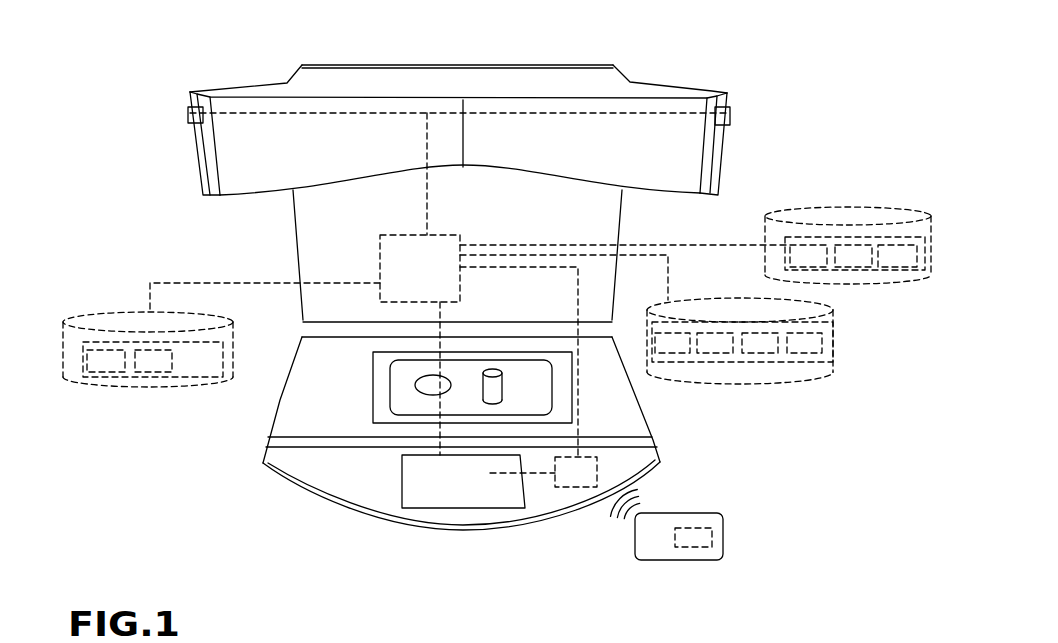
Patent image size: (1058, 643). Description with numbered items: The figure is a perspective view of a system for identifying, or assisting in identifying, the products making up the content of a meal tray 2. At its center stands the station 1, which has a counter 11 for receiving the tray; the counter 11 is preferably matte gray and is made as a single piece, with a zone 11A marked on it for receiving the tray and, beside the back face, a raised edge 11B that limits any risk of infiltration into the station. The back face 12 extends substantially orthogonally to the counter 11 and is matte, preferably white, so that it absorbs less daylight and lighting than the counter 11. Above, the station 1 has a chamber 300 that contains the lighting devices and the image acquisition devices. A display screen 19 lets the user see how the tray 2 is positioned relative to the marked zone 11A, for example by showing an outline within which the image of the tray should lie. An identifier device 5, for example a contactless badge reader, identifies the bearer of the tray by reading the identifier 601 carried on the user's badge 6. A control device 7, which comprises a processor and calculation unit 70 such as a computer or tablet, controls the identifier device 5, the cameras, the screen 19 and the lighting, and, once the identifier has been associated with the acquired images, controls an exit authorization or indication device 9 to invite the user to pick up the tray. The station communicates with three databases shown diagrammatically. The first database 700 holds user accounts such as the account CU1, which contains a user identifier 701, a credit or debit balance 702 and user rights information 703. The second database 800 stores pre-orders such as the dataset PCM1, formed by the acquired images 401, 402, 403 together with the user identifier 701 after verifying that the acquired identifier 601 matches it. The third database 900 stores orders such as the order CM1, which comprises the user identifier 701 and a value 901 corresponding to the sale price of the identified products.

The station 1 is at (453, 307).
The meal tray 2 is at (400, 402).
The identifier device 5 is at (580, 487).
The badge 6 is at (702, 528).
The control device 7 is at (349, 203).
The exit authorization or indication device 9 is at (192, 120).
The counter 11 is at (302, 428).
The zone marked on the counter 11A is at (383, 362).
The raised edge 11B is at (340, 333).
The back face 12 is at (307, 205).
The display screen 19 is at (472, 497).
The processor and calculation unit 70 is at (468, 285).
The chamber 300 is at (657, 184).
The image 401 is at (665, 353).
The image 402 is at (707, 352).
The image 403 is at (752, 352).
The identifier 601 is at (703, 533).
The first database 700 is at (851, 235).
The user identifier 701 is at (93, 363).
The credit or debit balance 702 is at (850, 260).
The user rights information 703 is at (892, 260).
The second database 800 is at (792, 387).
The third database 900 is at (148, 344).
The value 901 is at (143, 367).
The user account CU1 is at (827, 237).
The order CM1 is at (205, 378).
The dataset PCM1 is at (790, 362).